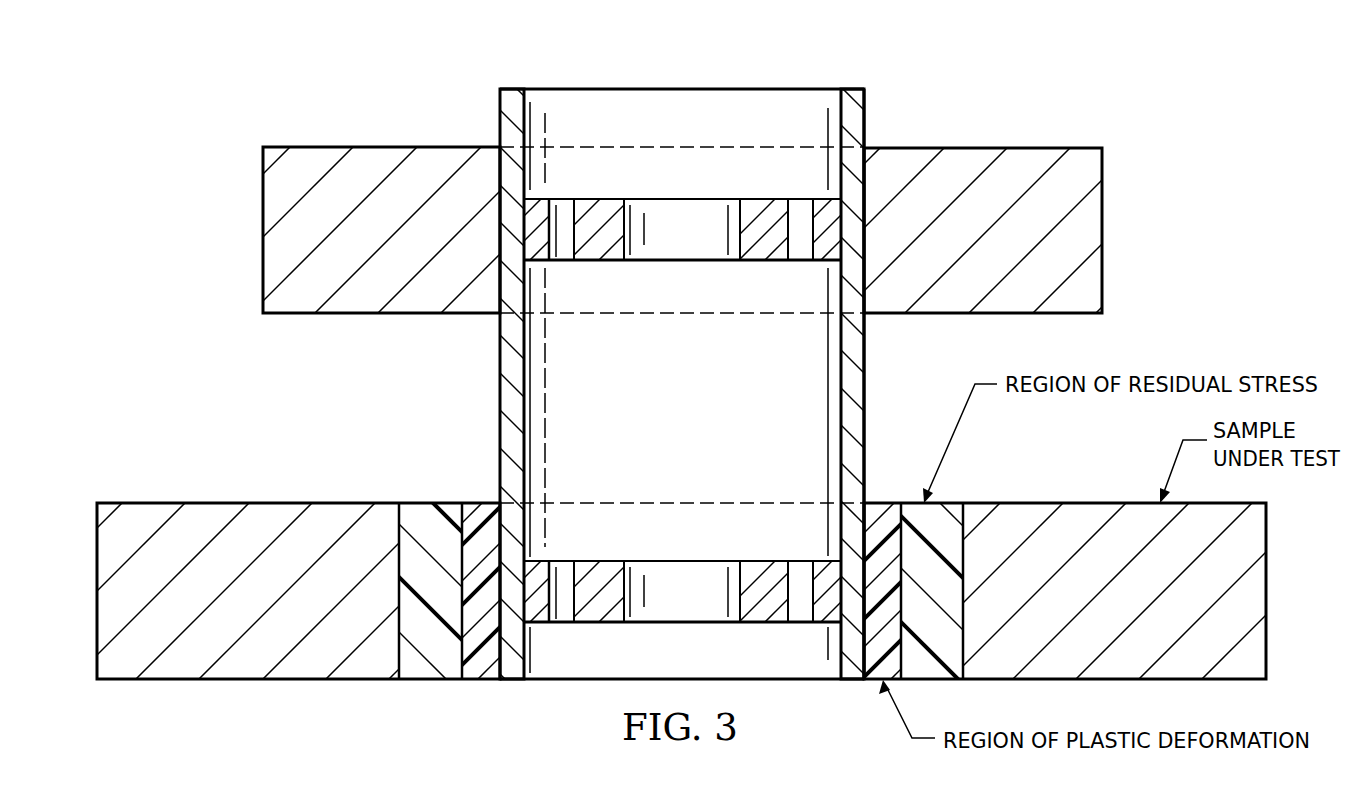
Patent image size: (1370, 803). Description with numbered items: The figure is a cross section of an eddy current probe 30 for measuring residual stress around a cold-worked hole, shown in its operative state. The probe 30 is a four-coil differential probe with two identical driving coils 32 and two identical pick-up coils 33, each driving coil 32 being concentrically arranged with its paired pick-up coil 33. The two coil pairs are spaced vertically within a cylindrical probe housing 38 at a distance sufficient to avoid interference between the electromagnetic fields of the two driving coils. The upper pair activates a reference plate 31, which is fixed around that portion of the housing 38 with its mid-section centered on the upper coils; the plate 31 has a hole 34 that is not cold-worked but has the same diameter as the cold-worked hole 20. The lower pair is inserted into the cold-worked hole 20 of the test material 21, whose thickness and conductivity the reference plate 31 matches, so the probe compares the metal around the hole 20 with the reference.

The cold-worked hole 20 is at (595, 97).
The test material 21 is at (212, 502).
The eddy current probe 30 is at (760, 55).
The reference plate 31 is at (385, 157).
The driving coil 32 is at (530, 226).
The pick-up coil 33 is at (593, 207).
The hole 34 is at (864, 193).
The probe housing 38 is at (500, 395).